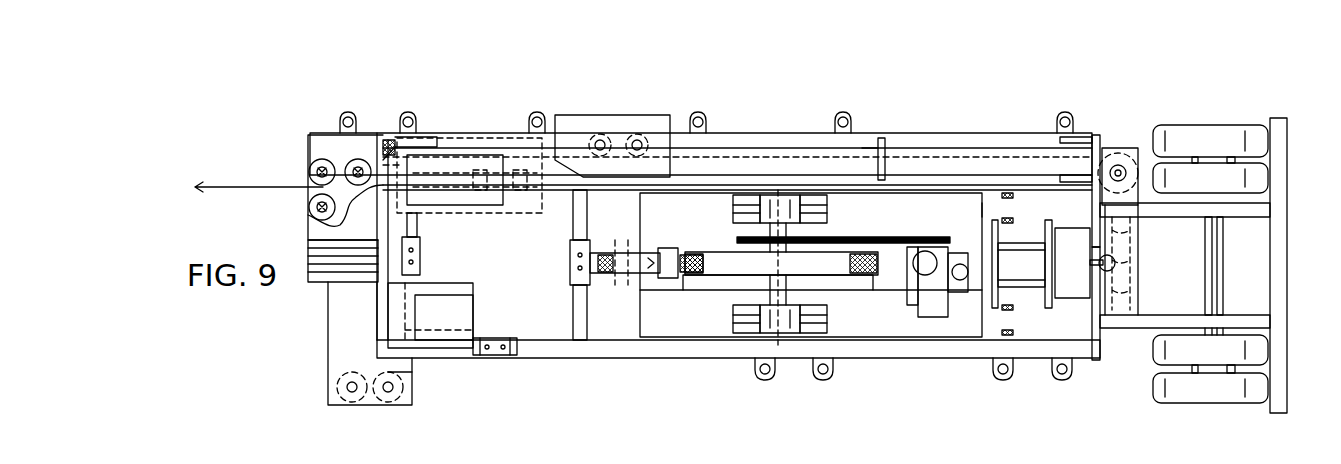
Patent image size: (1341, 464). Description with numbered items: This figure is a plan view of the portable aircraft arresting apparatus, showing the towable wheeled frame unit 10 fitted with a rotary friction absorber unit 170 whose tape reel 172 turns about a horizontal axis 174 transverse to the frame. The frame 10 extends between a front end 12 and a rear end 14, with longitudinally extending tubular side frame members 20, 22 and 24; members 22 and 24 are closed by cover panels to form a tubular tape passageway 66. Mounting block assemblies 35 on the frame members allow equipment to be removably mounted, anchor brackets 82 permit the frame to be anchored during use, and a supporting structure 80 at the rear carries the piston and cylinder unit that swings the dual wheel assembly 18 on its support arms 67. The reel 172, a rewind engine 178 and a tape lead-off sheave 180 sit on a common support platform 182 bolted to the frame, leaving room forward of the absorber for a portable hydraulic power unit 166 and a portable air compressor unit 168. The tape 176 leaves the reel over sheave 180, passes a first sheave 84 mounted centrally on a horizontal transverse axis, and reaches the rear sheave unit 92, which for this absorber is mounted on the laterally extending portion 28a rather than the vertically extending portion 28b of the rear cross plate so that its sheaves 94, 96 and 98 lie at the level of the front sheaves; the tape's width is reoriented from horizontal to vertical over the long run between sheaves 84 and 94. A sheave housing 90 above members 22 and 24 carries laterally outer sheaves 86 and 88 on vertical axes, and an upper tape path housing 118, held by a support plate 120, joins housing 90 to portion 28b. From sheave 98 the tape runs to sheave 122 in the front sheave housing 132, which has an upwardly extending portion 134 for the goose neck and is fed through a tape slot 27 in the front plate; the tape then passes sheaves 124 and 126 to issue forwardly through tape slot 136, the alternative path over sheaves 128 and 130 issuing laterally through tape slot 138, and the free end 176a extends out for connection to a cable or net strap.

The towable wheeled frame unit 10 is at (985, 105).
The front end 12 is at (384, 108).
The rear end 14 is at (1058, 105).
The dual wheel assembly 18 is at (1250, 422).
The side frame member 20 is at (575, 350).
The side frame member 22 is at (990, 170).
The side frame member 24 is at (735, 145).
The tape slot 27 is at (392, 135).
The laterally extending portion 28a is at (1093, 305).
The vertically extending portion 28b is at (1097, 140).
The mounting block assemblies 35 is at (573, 268).
The tape passageway 66 is at (427, 135).
The support arms 67 is at (1253, 317).
The supporting structure 80 is at (1065, 290).
The anchor brackets 82 is at (1003, 380).
The first sheave 84 is at (617, 278).
The laterally outer sheave 86 is at (638, 134).
The laterally outer sheave 88 is at (600, 134).
The sheave housing 90 is at (575, 115).
The rear sheave unit 92 is at (1135, 148).
The sheave 94 is at (1140, 243).
The sheave 96 is at (1163, 179).
The sheave 98 is at (1163, 141).
The upper tape path housing 118 is at (858, 150).
The support plate 120 is at (885, 143).
The sheave 122 is at (355, 162).
The sheave 124 is at (318, 160).
The sheave 126 is at (312, 208).
The sheave 128 is at (395, 398).
The sheave 130 is at (348, 397).
The front sheave housing 132 is at (328, 320).
The upwardly extending portion 134 is at (318, 282).
The tape slot 136 is at (308, 178).
The tape slot 138 is at (372, 398).
The portable hydraulic power unit 166 is at (447, 330).
The portable air compressor unit 168 is at (462, 150).
The rotary friction absorber unit 170 is at (702, 305).
The tape reel 172 is at (727, 275).
The axis 174 is at (780, 323).
The tape 176 is at (768, 158).
The free end 176a is at (196, 190).
The rewind engine 178 is at (933, 310).
The tape lead-off sheave 180 is at (665, 252).
The common support platform 182 is at (915, 210).